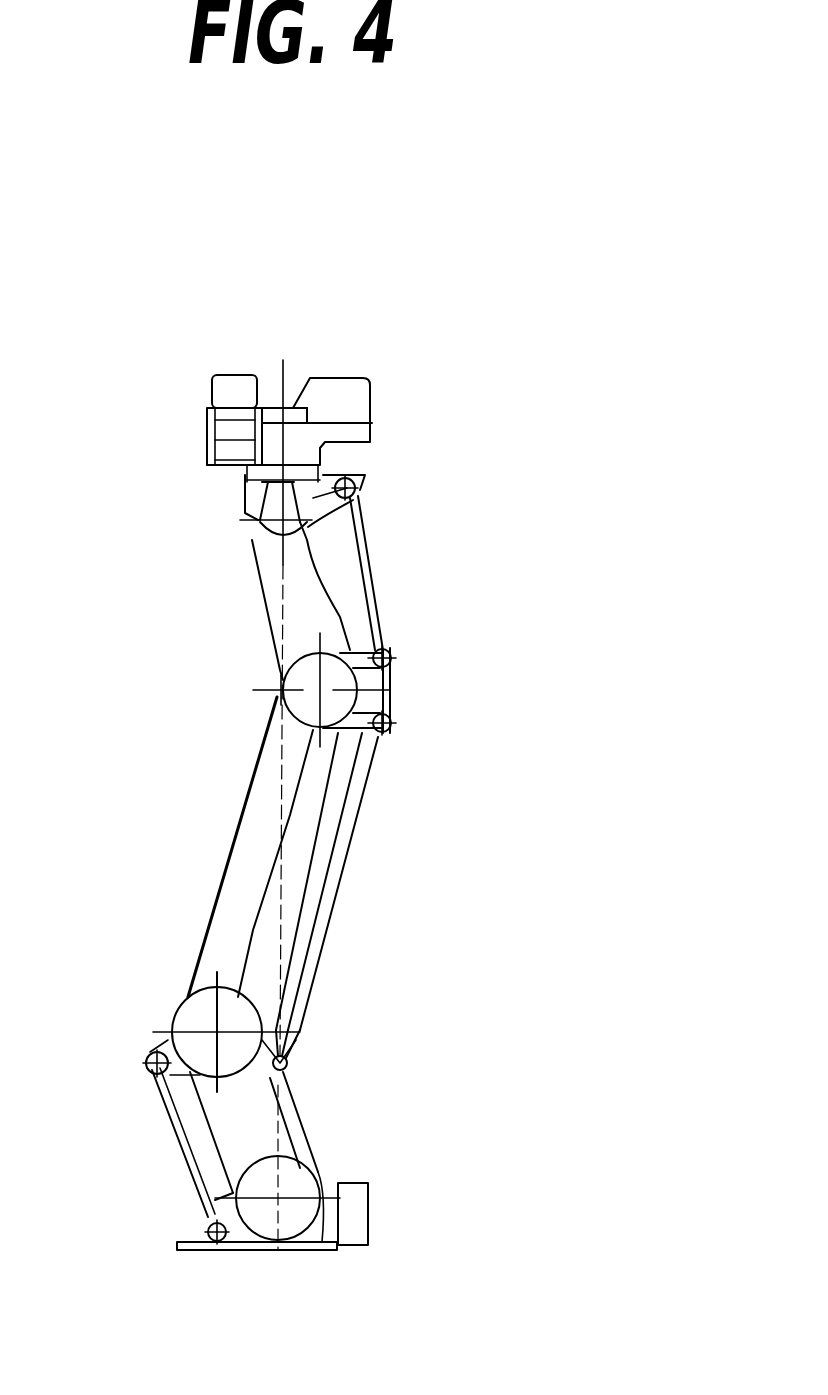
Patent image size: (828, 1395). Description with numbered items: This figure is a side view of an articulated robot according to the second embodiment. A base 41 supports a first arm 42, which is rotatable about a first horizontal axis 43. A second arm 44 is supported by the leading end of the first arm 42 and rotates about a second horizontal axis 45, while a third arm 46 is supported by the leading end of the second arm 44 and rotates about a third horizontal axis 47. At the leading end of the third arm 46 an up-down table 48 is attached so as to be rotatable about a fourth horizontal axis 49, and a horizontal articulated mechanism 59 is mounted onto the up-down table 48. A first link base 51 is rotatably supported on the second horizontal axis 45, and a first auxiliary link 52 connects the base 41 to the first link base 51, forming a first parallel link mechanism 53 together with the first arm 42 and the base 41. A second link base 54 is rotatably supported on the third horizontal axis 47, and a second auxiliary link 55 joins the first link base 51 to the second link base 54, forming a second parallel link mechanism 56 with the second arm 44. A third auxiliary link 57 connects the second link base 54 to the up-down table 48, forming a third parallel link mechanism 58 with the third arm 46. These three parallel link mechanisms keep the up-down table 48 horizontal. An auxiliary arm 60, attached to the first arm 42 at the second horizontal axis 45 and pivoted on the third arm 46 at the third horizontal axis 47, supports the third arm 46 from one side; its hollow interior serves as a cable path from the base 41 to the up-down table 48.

The base 41 is at (322, 1248).
The first arm 42 is at (265, 1100).
The first horizontal axis 43 is at (307, 1170).
The second arm 44 is at (267, 953).
The second horizontal axis 45 is at (208, 1018).
The third arm 46 is at (267, 597).
The third horizontal axis 47 is at (277, 702).
The up-down table 48 is at (327, 473).
The fourth horizontal axis 49 is at (243, 522).
The first link base 51 is at (157, 1040).
The first auxiliary link 52 is at (190, 1180).
The first parallel link mechanism 53 is at (167, 1120).
The second link base 54 is at (385, 686).
The second auxiliary link 55 is at (345, 870).
The second parallel link mechanism 56 is at (360, 817).
The third auxiliary link 57 is at (378, 620).
The third parallel link mechanism 58 is at (370, 563).
The horizontal articulated mechanism 59 is at (345, 362).
The auxiliary arm 60 is at (250, 820).